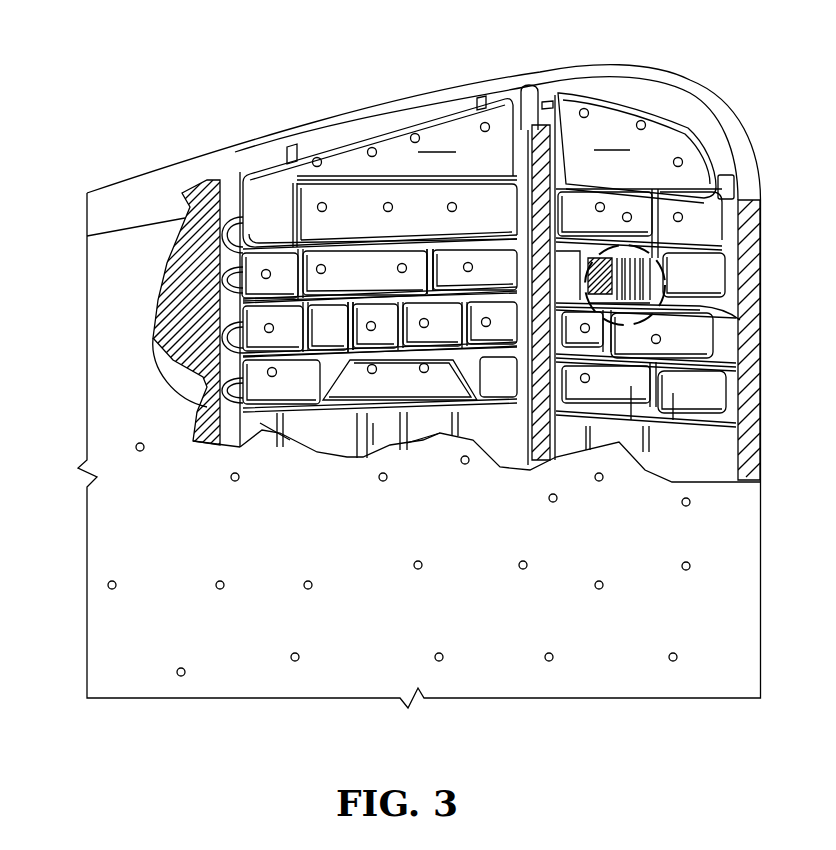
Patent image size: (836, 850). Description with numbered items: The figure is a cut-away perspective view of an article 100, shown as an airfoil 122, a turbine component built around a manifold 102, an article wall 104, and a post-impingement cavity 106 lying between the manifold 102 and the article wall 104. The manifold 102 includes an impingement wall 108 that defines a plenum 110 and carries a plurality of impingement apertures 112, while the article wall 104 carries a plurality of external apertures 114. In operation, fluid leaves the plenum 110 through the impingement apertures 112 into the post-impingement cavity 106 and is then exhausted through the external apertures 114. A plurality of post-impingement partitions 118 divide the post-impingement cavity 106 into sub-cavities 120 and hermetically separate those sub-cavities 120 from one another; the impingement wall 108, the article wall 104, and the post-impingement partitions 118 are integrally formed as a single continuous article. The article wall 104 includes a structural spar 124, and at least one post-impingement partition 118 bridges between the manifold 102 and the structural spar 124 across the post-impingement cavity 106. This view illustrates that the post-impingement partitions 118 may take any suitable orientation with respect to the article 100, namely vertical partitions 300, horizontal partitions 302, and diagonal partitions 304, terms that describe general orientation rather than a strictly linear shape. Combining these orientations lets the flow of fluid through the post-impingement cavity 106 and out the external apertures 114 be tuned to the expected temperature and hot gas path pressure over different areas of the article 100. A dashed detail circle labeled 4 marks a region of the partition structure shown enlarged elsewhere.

The article 100 is at (298, 62).
The manifold 102 is at (403, 118).
The article wall 104 is at (490, 72).
The post-impingement cavity 106 is at (432, 110).
The impingement wall 108 is at (524, 86).
The plenum 110 is at (500, 304).
The impingement apertures 112 is at (645, 123).
The external apertures 114 is at (692, 565).
The post-impingement partitions 118 is at (240, 325).
The sub-cavities 120 is at (260, 423).
The airfoil 122 is at (431, 390).
The structural spar 124 is at (628, 214).
The vertical partitions 300 is at (288, 212).
The horizontal partitions 302 is at (350, 233).
The diagonal partitions 304 is at (347, 370).
The detail view circle (FIG. 4) 4 is at (634, 285).